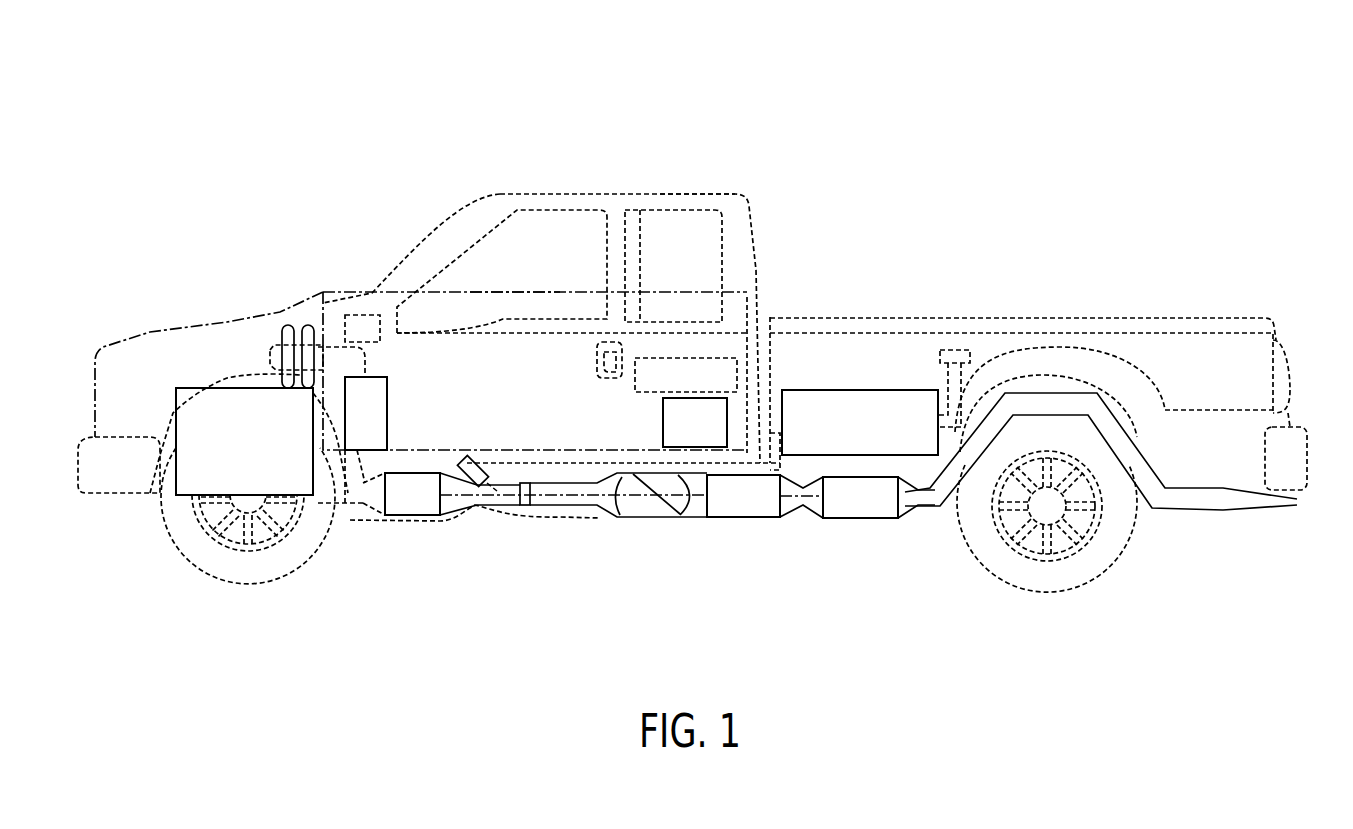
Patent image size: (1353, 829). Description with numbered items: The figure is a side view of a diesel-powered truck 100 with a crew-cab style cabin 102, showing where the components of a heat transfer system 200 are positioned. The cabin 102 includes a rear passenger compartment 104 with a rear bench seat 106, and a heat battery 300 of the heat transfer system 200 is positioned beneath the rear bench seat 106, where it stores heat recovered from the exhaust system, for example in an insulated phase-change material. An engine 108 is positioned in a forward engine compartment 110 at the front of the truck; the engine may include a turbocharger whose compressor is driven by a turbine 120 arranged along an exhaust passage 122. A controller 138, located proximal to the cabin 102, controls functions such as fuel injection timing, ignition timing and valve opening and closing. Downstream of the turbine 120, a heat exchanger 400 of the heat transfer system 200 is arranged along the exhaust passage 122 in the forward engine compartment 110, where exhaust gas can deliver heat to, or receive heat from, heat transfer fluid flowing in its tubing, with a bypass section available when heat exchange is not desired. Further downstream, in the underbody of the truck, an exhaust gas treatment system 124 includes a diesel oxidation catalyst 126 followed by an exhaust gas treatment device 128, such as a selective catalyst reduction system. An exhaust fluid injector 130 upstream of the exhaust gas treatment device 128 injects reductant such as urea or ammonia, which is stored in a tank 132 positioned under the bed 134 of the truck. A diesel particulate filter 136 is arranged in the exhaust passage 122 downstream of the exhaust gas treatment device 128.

The diesel-powered truck 100 is at (852, 86).
The cabin 102 is at (615, 180).
The rear passenger compartment 104 is at (681, 190).
The rear bench seat 106 is at (672, 387).
The engine 108 is at (230, 453).
The forward engine compartment 110 is at (158, 305).
The turbine 120 is at (281, 317).
The exhaust passage 122 is at (343, 503).
The exhaust gas treatment system 124 is at (888, 552).
The diesel oxidation catalyst 126 is at (397, 505).
The exhaust gas treatment device 128 is at (729, 507).
The exhaust fluid injector 130 is at (481, 453).
The tank 132 is at (845, 433).
The bed 134 is at (1020, 297).
The diesel particulate filter 136 is at (845, 508).
The controller 138 is at (350, 309).
The heat transfer system 200 is at (518, 290).
The heat battery 300 is at (680, 434).
The heat exchanger 400 is at (351, 424).